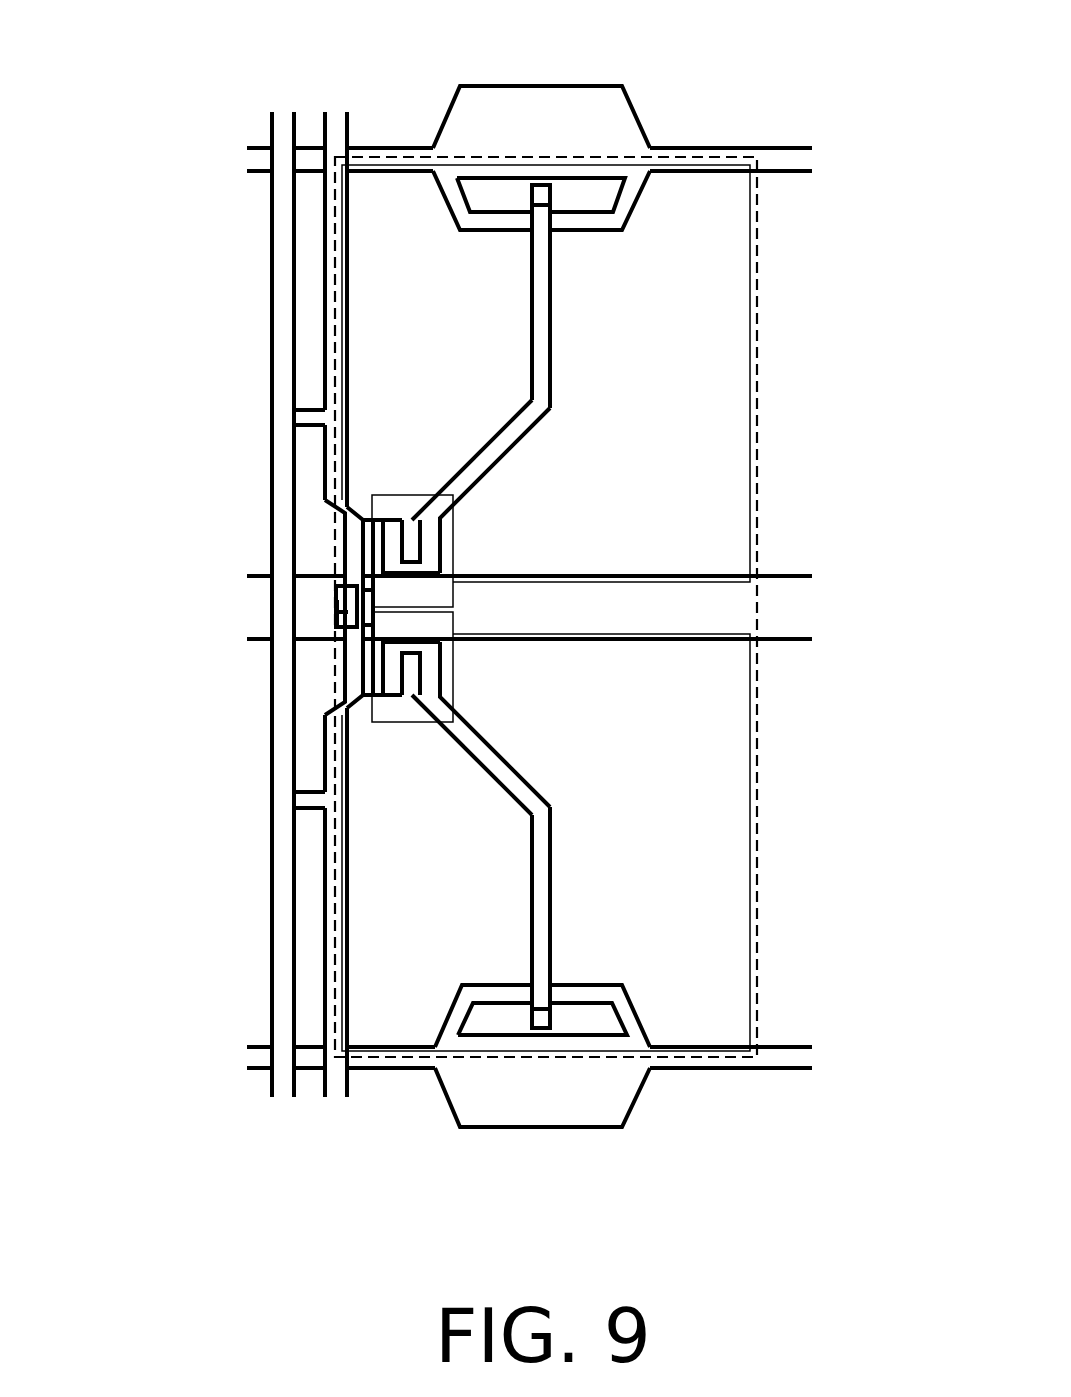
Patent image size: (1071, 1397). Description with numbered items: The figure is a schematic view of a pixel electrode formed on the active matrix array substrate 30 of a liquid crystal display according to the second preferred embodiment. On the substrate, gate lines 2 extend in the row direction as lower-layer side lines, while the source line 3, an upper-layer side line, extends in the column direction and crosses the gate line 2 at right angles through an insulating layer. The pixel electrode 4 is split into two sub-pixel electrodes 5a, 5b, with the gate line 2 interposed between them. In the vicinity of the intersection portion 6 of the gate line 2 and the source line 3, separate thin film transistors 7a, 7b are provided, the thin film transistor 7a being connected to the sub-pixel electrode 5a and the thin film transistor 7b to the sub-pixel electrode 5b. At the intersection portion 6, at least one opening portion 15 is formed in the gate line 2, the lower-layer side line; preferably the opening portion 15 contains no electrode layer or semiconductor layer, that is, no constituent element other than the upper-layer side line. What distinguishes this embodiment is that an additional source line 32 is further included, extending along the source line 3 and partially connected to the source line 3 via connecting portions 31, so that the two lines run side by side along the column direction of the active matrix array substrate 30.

The active matrix array substrate 30 is at (122, 41).
The source line 3 is at (322, 263).
The additional source line 32 is at (272, 334).
The connecting portions 31 is at (310, 400).
The gate line 2 is at (797, 573).
The pixel electrode 4 is at (757, 312).
The sub-pixel electrode 5a is at (738, 388).
The sub-pixel electrode 5b is at (738, 822).
The thin film transistor 7a is at (455, 520).
The thin film transistor 7b is at (455, 682).
The intersection portion 6 is at (330, 598).
The opening portion 15 is at (335, 613).